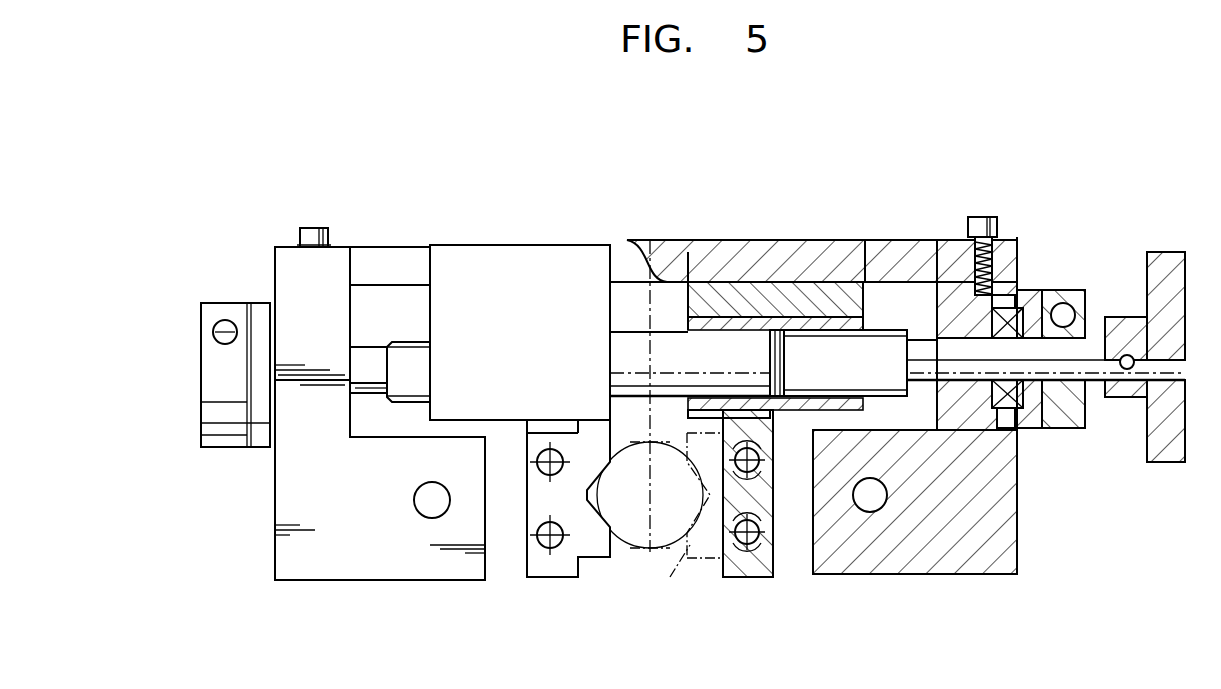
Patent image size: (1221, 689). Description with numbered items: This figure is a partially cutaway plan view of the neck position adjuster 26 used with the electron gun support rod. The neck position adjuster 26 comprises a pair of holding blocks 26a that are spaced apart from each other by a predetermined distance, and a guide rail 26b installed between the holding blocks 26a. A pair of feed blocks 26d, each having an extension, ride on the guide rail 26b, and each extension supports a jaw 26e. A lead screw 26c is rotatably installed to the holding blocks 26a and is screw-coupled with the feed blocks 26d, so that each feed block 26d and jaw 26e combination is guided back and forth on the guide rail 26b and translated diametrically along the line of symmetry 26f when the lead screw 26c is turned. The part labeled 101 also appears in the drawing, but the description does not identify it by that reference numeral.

The neck position adjuster 26 is at (290, 463).
The holding block 26a is at (1010, 513).
The guide rail 26b is at (375, 260).
The lead screw 26c is at (363, 347).
The feed block 26d is at (687, 242).
The jaw 26e is at (605, 527).
The line of symmetry 26f is at (650, 353).
The guide bracket 101 is at (628, 533).